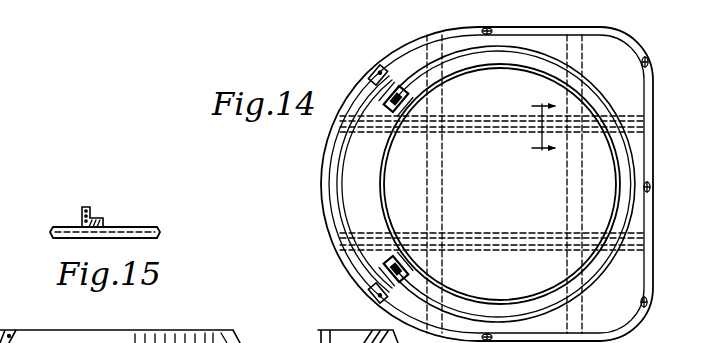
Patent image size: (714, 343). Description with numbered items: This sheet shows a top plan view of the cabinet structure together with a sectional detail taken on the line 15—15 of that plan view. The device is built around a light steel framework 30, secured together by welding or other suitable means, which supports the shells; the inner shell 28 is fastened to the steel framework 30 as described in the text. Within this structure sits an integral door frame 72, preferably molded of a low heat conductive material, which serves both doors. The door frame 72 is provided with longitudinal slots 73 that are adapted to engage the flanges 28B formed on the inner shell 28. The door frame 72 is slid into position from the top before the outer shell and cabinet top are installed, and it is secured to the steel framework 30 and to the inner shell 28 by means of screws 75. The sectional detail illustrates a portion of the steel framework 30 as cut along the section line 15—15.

In FIG. 14, the section line 15— 15 is at (530, 127).
In FIG. 14, the inner shell 28 is at (589, 99).
In FIG. 14, the flanges 28B is at (396, 110).
In FIG. 14, the steel framework 30 is at (656, 197).
In FIG. 15, the steel framework 30 is at (138, 228).
In FIG. 14, the door frame 72 is at (372, 252).
In FIG. 14, the longitudinal slots 73 is at (384, 108).
In FIG. 14, the screws 75 is at (408, 90).